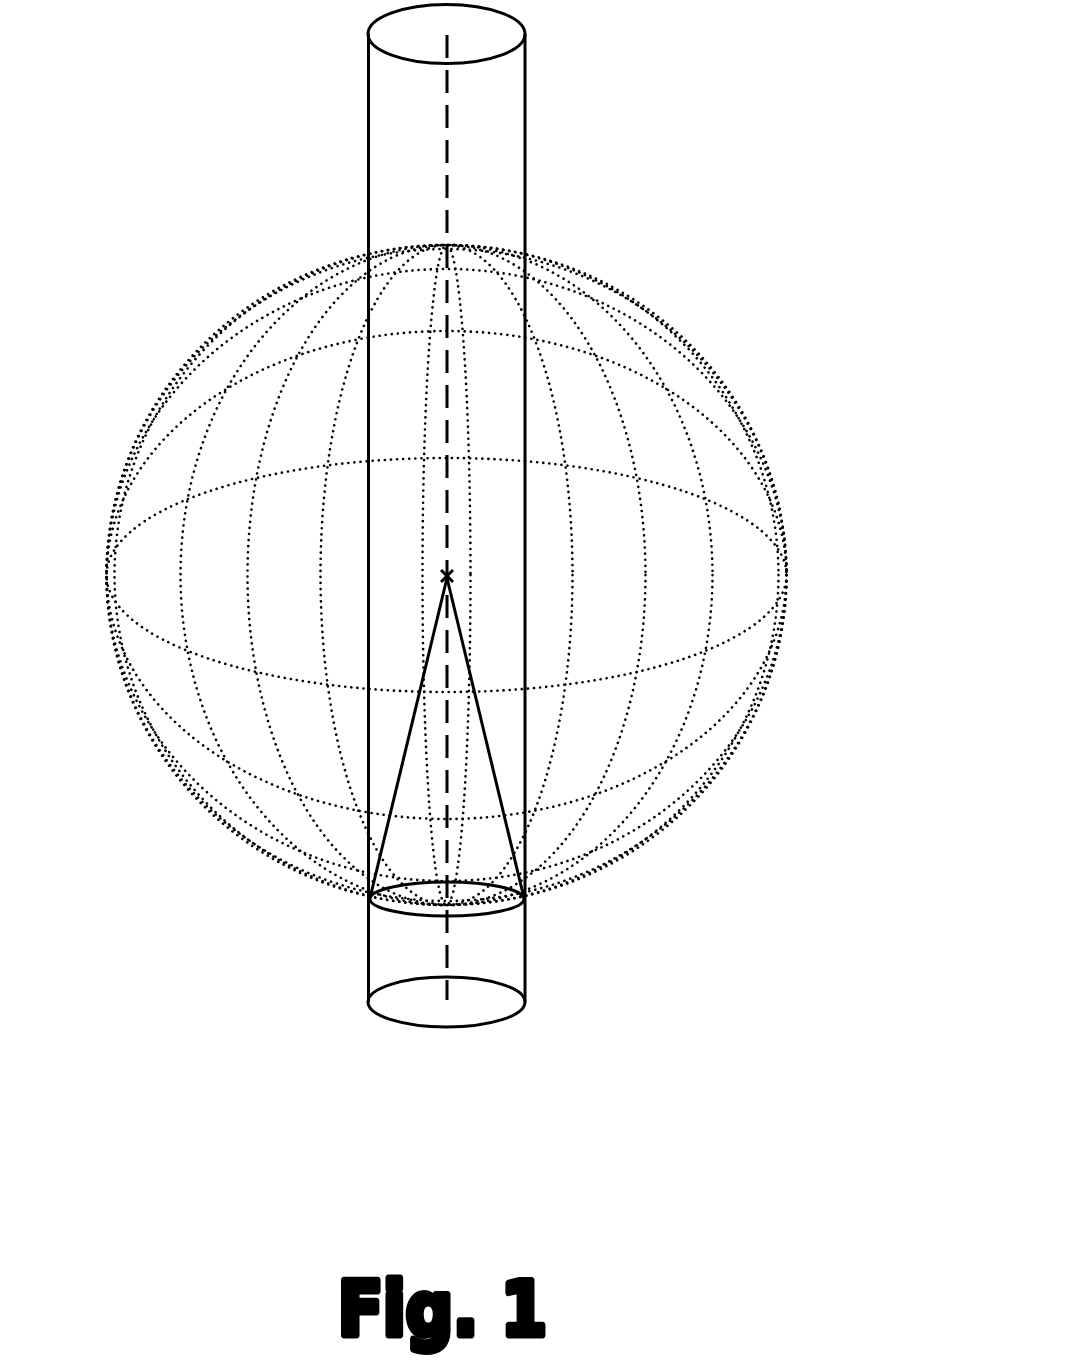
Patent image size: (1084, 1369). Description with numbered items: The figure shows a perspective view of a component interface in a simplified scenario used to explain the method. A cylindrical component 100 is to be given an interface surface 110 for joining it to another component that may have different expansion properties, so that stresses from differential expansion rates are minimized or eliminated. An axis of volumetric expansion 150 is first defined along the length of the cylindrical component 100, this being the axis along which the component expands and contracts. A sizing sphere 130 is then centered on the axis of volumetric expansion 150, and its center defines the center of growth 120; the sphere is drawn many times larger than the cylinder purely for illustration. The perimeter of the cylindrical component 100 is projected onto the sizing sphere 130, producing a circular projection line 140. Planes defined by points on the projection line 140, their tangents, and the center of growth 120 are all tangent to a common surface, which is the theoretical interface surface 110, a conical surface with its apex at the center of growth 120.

The cylindrical component 100 is at (527, 198).
The interface surface 110 is at (526, 784).
The center of growth 120 is at (455, 573).
The sizing sphere 130 is at (700, 305).
The projection line 140 is at (391, 943).
The axis of volumetric expansion 150 is at (482, 1025).